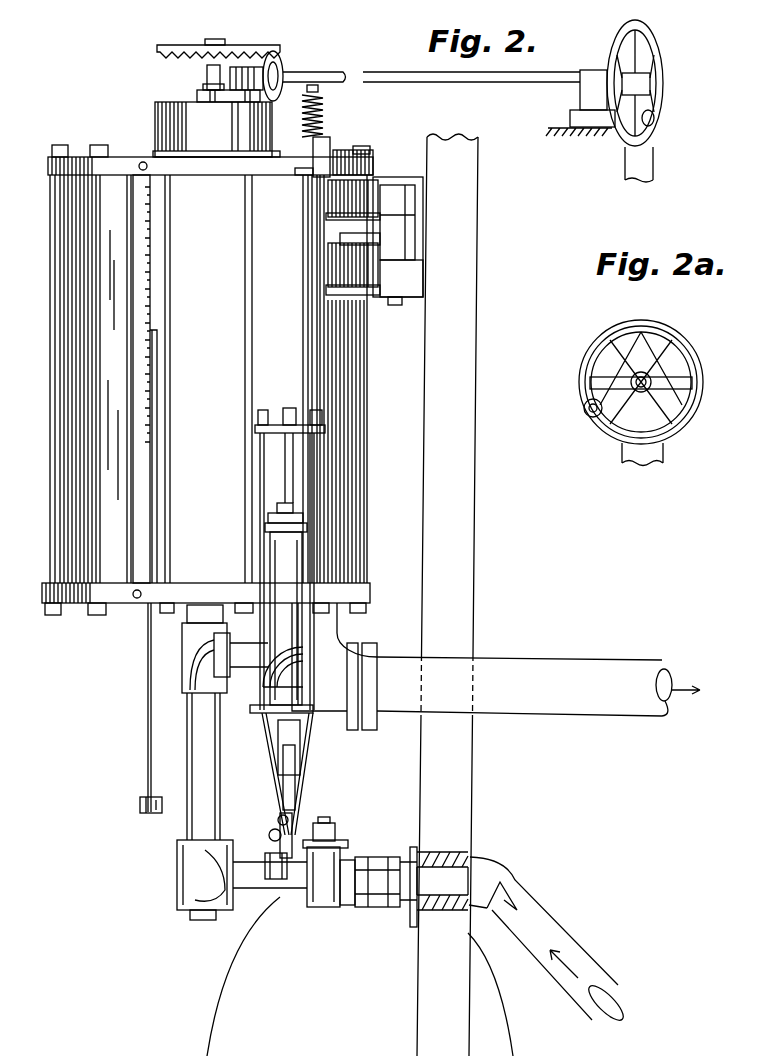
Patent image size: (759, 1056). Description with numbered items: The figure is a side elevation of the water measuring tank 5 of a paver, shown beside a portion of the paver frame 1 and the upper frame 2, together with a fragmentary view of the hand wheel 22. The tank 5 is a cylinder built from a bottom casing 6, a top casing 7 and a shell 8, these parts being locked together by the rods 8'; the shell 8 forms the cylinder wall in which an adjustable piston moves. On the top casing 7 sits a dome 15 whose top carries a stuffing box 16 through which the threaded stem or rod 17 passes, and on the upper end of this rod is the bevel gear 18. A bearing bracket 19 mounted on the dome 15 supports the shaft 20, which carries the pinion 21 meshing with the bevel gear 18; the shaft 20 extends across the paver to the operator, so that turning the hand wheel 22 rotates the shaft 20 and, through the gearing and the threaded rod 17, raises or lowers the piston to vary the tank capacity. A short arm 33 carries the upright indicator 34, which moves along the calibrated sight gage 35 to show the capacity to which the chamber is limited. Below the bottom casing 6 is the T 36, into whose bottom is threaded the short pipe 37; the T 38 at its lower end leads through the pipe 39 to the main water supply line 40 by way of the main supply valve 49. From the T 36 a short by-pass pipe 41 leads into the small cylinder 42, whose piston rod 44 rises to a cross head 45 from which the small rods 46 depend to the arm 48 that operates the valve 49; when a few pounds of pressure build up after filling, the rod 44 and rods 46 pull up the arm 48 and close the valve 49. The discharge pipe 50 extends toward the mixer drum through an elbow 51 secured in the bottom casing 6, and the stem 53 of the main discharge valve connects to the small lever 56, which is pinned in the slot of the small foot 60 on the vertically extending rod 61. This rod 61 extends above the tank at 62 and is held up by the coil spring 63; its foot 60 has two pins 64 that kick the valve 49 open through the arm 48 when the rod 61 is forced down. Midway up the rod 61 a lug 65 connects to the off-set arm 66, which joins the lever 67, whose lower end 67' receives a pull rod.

In FIG. 2, the paver frame 1 is at (450, 790).
In FIG. 2, the upper frame 2 is at (418, 205).
In FIG. 2, the tank 5 is at (208, 379).
In FIG. 2, the bottom casing 6 is at (85, 600).
In FIG. 2, the top casing 7 is at (86, 163).
In FIG. 2, the shell 8 is at (55, 379).
In FIG. 2, the rods 8' is at (71, 379).
In FIG. 2, the dome 15 is at (158, 107).
In FIG. 2, the stuffing box 16 is at (205, 92).
In FIG. 2, the stem or rod 17 is at (207, 72).
In FIG. 2, the bevel gear 18 is at (185, 47).
In FIG. 2, the bearing bracket 19 is at (238, 60).
In FIG. 2, the shaft 20 is at (338, 73).
In FIG. 2A, the shaft 20 is at (650, 390).
In FIG. 2, the pinion 21 is at (272, 55).
In FIG. 2, the hand wheel 22 is at (667, 103).
In FIG. 2A, the hand wheel 22 is at (598, 420).
In FIG. 2, the short arm 33 is at (150, 815).
In FIG. 2, the upright indicator 34 is at (150, 330).
In FIG. 2, the calibrated sight gage 35 is at (147, 268).
In FIG. 2, the T 36 is at (195, 675).
In FIG. 2, the short pipe 37 is at (195, 793).
In FIG. 2, the T 38 is at (180, 886).
In FIG. 2, the pipe 39 is at (278, 897).
In FIG. 2, the main water supply line 40 is at (552, 920).
In FIG. 2, the short by-pass pipe 41 is at (245, 688).
In FIG. 2, the small cylinder 42 is at (290, 575).
In FIG. 2, the piston rod 44 is at (290, 483).
In FIG. 2, the cross head 45 is at (273, 410).
In FIG. 2, the small rods 46 is at (258, 466).
In FIG. 2, the arm 48 is at (275, 843).
In FIG. 2, the main supply valve 49 is at (336, 847).
In FIG. 2, the discharge pipe 50 is at (515, 672).
In FIG. 2, the elbow 51 is at (325, 700).
In FIG. 2, the stem 53 is at (285, 762).
In FIG. 2, the small lever 56 is at (282, 780).
In FIG. 2, the small foot 60 is at (300, 815).
In FIG. 2, the vertically extending rod 61 is at (307, 322).
In FIG. 2, the upper end of rod 62 is at (318, 90).
In FIG. 2, the coil spring 63 is at (323, 128).
In FIG. 2, the pins 64 is at (268, 827).
In FIG. 2, the lug 65 is at (310, 400).
In FIG. 2, the off-set arm 66 is at (318, 297).
In FIG. 2, the lever 67 is at (323, 201).
In FIG. 2, the lower end of lever 67' is at (322, 264).